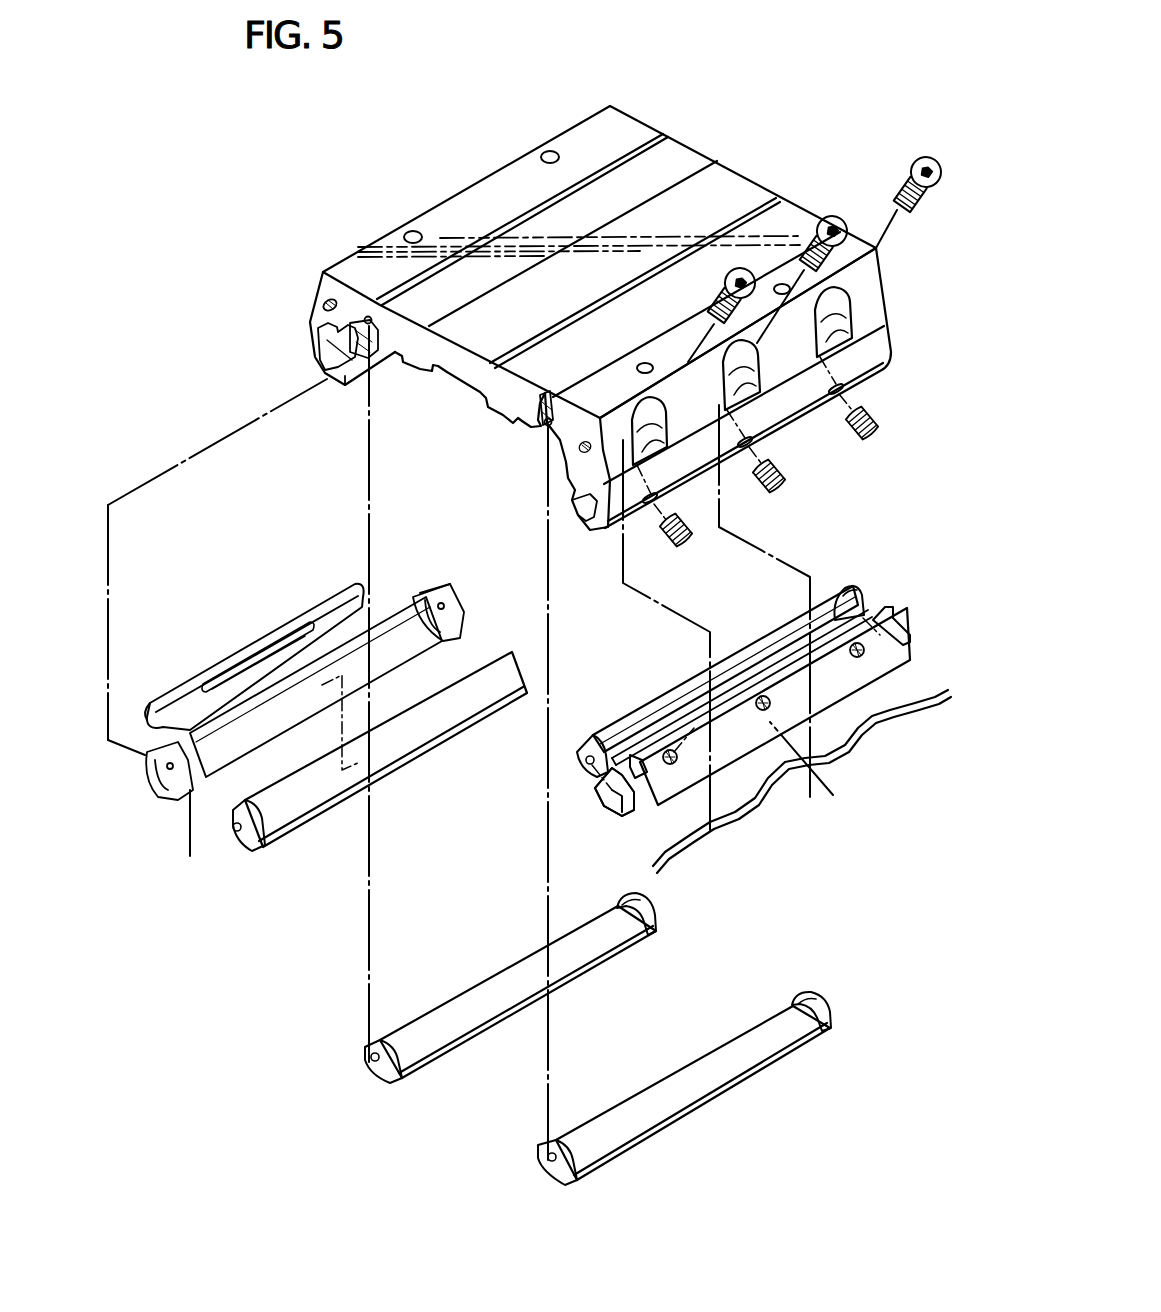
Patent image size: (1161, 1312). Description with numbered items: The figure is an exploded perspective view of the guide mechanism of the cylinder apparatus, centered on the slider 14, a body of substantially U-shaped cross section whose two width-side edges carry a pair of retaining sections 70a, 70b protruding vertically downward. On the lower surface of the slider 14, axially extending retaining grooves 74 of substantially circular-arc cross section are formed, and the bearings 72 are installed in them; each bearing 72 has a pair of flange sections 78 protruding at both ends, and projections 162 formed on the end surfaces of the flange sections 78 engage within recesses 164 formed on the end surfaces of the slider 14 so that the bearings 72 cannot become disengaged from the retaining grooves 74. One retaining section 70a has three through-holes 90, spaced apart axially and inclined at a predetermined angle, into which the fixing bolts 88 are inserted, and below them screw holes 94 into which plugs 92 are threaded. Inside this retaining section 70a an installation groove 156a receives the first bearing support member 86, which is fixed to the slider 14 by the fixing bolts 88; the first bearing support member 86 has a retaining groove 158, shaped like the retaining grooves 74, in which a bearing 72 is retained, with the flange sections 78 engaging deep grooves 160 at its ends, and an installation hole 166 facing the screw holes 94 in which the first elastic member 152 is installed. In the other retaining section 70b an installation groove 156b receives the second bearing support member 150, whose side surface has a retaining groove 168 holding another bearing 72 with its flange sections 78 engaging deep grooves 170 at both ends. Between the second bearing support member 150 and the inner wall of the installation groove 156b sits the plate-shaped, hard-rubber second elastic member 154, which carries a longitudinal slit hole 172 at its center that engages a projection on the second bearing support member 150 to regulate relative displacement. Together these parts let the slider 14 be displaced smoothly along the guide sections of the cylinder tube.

The slider 14 is at (618, 131).
The retaining section 70a is at (594, 529).
The retaining section 70b is at (317, 300).
The bearing 72 is at (400, 752).
The retaining groove 74 is at (376, 350).
The flange section 78 is at (255, 848).
The first bearing support member 86 is at (626, 818).
The fixing bolt 88 is at (726, 287).
The through-hole 90 is at (660, 432).
The plug 92 is at (690, 544).
The screw hole 94 is at (650, 506).
The second bearing support member 150 is at (380, 662).
The first elastic member 152 is at (802, 781).
The second elastic member 154 is at (336, 592).
The installation groove 156a is at (575, 475).
The installation groove 156b is at (318, 343).
The retaining groove 158 is at (772, 665).
The deep groove 160 is at (893, 620).
The projection 162 is at (237, 832).
The recess 164 is at (378, 313).
The installation hole 166 is at (762, 732).
The retaining groove 168 is at (280, 715).
The deep groove 170 is at (188, 727).
The slit hole 172 is at (283, 668).